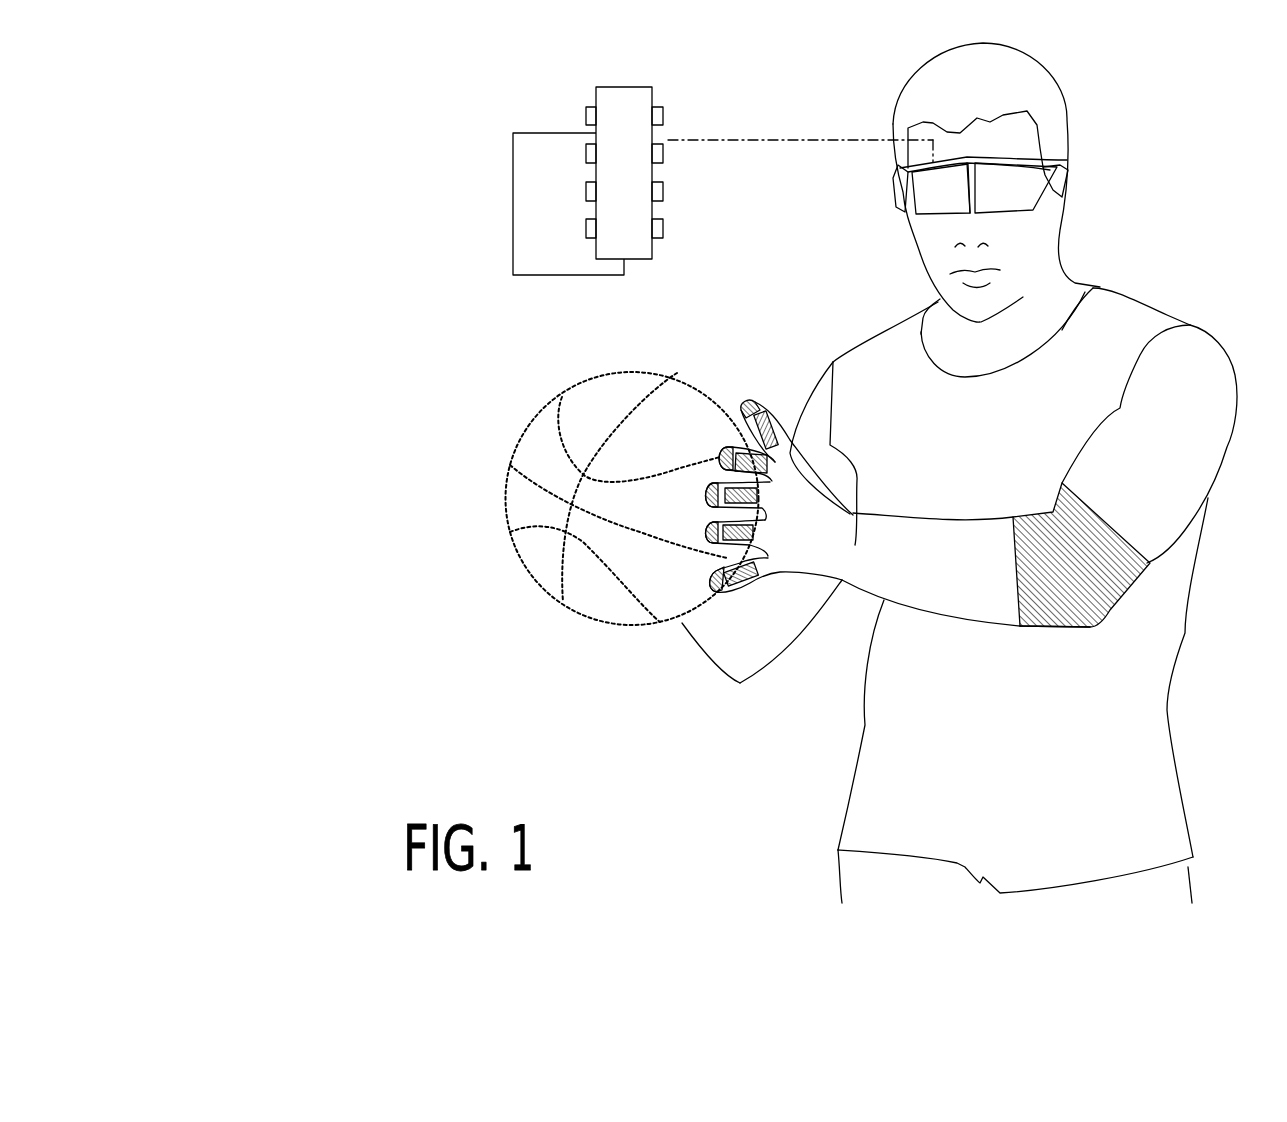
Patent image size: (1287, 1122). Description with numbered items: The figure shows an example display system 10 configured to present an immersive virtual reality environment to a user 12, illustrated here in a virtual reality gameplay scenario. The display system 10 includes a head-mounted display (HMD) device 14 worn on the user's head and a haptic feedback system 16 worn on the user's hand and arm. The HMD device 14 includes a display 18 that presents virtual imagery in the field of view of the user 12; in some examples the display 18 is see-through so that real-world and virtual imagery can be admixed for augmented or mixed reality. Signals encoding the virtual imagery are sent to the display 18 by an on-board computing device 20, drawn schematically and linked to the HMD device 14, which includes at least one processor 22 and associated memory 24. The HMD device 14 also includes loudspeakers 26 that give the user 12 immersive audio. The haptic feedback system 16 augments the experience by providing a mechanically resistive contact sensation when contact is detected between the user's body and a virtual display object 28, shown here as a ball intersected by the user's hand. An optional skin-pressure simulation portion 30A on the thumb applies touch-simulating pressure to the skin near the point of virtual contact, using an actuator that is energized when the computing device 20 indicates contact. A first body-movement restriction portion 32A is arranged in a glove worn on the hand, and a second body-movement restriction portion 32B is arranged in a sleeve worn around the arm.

The display system 10 is at (446, 348).
The user 12 is at (1036, 453).
The head-mounted display (HMD) device 14 is at (974, 187).
The haptic feedback system 16 is at (872, 545).
The display 18 is at (956, 210).
The on-board computing device 20 is at (712, 159).
The processor 22 is at (580, 213).
The memory 24 is at (636, 180).
The loudspeakers 26 is at (1070, 176).
The virtual display object 28 is at (675, 580).
The skin-pressure simulation portion 30A is at (742, 406).
The first body-movement restriction portion 32A is at (743, 583).
The second body-movement restriction portion 32B is at (1101, 566).